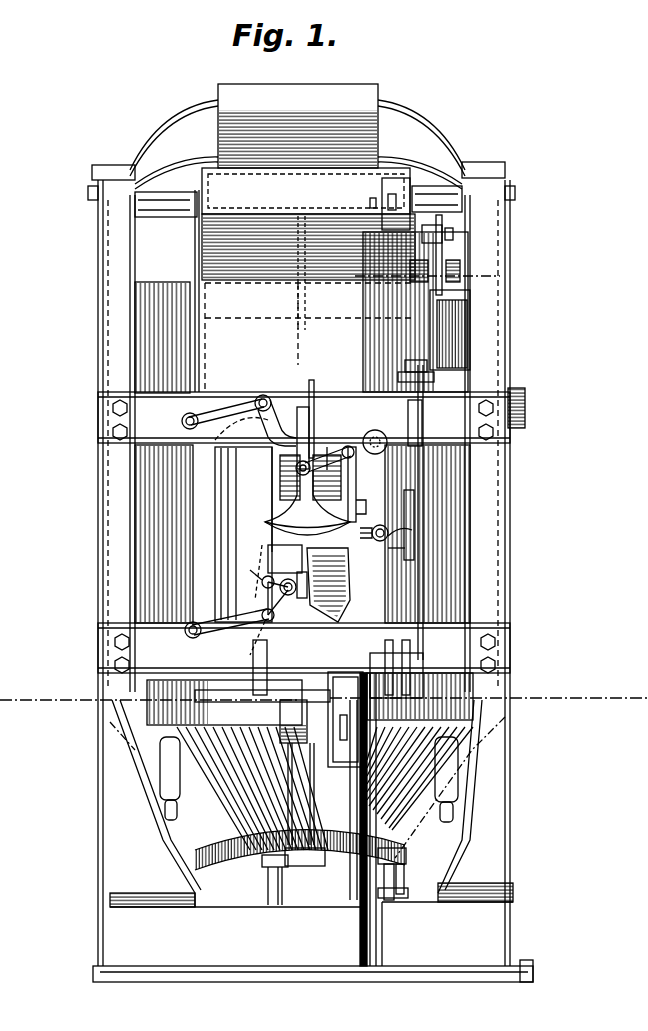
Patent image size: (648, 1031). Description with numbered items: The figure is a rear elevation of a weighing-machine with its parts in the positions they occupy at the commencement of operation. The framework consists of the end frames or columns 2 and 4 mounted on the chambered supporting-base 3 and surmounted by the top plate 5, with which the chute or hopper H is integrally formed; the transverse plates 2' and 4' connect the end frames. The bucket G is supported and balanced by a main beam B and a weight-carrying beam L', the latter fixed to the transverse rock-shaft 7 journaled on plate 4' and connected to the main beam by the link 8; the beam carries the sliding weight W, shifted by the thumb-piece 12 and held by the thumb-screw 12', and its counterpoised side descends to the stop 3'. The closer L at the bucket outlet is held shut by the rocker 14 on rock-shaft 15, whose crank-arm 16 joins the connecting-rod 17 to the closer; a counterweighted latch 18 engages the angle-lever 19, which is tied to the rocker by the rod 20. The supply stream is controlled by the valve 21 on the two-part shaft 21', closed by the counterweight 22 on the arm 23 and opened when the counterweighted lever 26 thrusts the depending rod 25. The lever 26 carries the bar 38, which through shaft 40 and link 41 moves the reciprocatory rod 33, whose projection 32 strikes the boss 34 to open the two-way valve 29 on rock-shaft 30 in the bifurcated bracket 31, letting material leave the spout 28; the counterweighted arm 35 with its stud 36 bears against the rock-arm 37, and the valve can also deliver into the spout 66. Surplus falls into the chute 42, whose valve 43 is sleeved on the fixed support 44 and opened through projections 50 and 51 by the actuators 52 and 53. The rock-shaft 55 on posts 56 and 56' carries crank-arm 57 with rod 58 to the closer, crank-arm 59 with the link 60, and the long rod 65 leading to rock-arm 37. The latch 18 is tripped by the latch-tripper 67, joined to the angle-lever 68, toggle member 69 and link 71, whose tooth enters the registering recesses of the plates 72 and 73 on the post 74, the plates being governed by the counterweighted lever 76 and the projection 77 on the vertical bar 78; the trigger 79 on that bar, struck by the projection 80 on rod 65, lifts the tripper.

The chute or hopper H is at (298, 126).
The top plate 5 is at (186, 118).
The rod 20 is at (412, 232).
The valve 21 is at (306, 191).
The two-part shaft 21' is at (317, 189).
The counterweight 22 is at (390, 196).
The arm 23 is at (386, 203).
The crank-arm 16 is at (318, 240).
The rock-shaft 15 is at (400, 258).
The rocker 14 is at (418, 255).
The angle-lever 19 is at (446, 272).
The thrust-rod 25 is at (194, 260).
The connecting-rod 17 is at (297, 300).
The bucket G is at (195, 337).
The latch 18 is at (443, 325).
The toggle member 69 is at (405, 364).
The counterweighted angle-lever 68 is at (516, 390).
The transverse plate 2' is at (288, 417).
The end frame 2 is at (129, 534).
The end frame 4 is at (459, 534).
The transverse plate 4' is at (314, 648).
The link 41 is at (228, 402).
The shaft 40 is at (182, 418).
The projection 32 is at (283, 432).
The boss or stud 34 is at (268, 458).
The reciprocatory rod 33 is at (270, 492).
The bifurcated bracket 31 is at (314, 440).
The rock-shaft 30 is at (296, 469).
The stud 36 is at (342, 450).
The rock-arm 37 is at (345, 448).
The counterweighted arm 35 is at (375, 431).
The link 71 is at (416, 432).
The latch-tripper 67 is at (420, 448).
The rod or bar 38 is at (222, 470).
The spout 28 is at (280, 496).
The valve 29 is at (283, 520).
The spout 66 is at (318, 548).
The rod 65 is at (350, 476).
The projection 80 is at (363, 506).
The trigger 79 is at (380, 524).
The projection 77 is at (412, 537).
The reciprocatory plate 72 is at (412, 546).
The sliding plate 73 is at (405, 549).
The vertical bar 78 is at (370, 560).
The projection 50 is at (305, 562).
The chute 42 is at (268, 547).
The by-pass actuator 53 is at (262, 570).
The projection 51 is at (262, 581).
The actuator 52 is at (262, 612).
The fixed support 44 is at (290, 597).
The valve 43 is at (194, 622).
The counterweighted lever 26 is at (268, 684).
The sliding weight W is at (345, 705).
The weight-carrying beam L' is at (340, 719).
The counterweighted lever 76 is at (400, 662).
The post 74 is at (412, 656).
The rock-shaft 7 is at (432, 688).
The thumb-piece 12 is at (420, 776).
The main beam B is at (237, 765).
The thumb-screw 12' is at (279, 728).
The link 8 is at (309, 772).
The link 60 is at (288, 796).
The stop 3' is at (336, 800).
The closer L is at (300, 863).
The rock-shaft 55 is at (302, 868).
The post 56 is at (258, 888).
The crank-arm 59 is at (279, 896).
The crank-arm 57 is at (406, 860).
The post 56' is at (423, 894).
The rod 58 is at (386, 898).
The supporting-base 3 is at (311, 919).